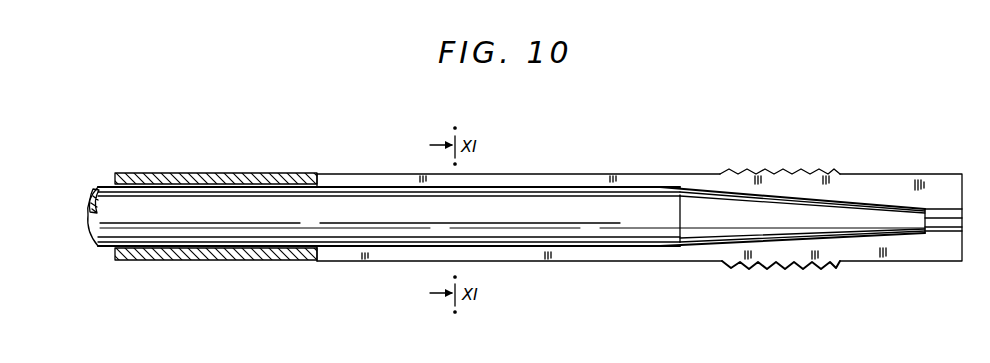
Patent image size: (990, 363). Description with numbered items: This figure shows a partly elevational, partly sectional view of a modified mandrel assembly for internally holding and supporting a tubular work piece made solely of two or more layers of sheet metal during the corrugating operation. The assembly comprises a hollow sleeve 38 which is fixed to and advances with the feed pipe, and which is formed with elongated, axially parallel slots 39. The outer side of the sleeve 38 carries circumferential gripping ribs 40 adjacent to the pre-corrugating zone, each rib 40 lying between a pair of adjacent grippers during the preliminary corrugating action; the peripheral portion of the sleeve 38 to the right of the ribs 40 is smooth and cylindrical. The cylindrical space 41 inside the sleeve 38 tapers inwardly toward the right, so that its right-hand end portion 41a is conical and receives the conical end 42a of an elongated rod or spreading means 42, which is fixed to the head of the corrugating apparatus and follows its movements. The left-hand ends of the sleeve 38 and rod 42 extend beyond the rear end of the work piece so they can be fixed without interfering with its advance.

The sleeve 38 is at (219, 172).
The slots 39 is at (635, 182).
The circumferential gripping ribs 40 is at (773, 172).
The cylindrical space 41 is at (612, 248).
The right-hand end portion 41a is at (798, 238).
The rod 42 is at (523, 212).
The conical end 42a is at (872, 218).